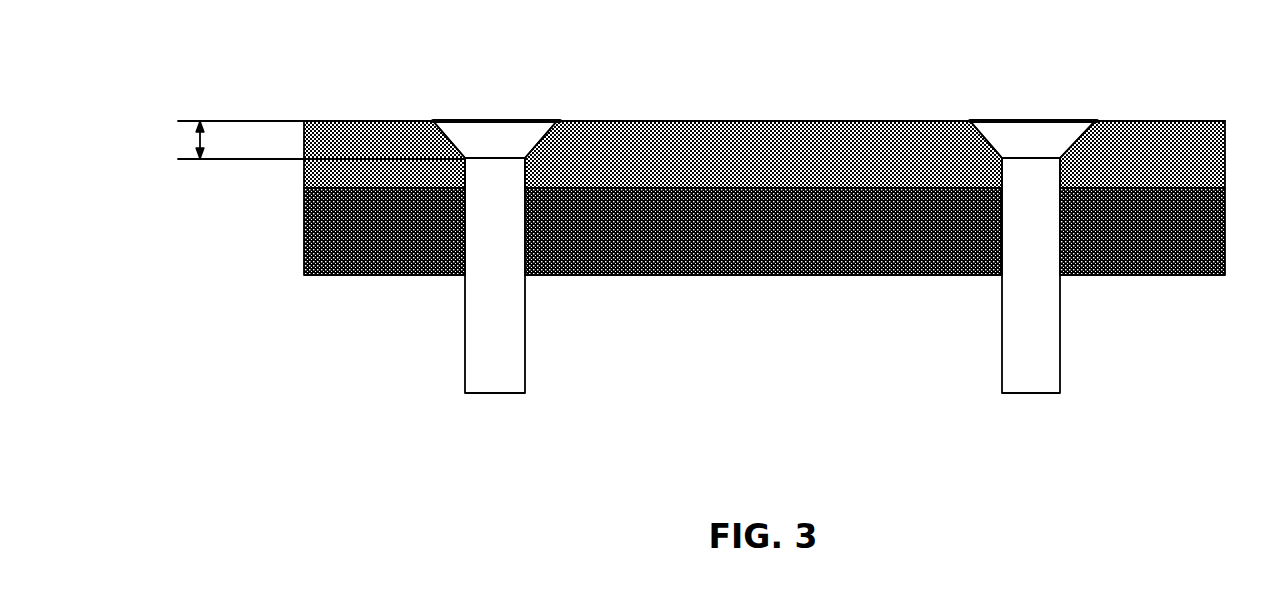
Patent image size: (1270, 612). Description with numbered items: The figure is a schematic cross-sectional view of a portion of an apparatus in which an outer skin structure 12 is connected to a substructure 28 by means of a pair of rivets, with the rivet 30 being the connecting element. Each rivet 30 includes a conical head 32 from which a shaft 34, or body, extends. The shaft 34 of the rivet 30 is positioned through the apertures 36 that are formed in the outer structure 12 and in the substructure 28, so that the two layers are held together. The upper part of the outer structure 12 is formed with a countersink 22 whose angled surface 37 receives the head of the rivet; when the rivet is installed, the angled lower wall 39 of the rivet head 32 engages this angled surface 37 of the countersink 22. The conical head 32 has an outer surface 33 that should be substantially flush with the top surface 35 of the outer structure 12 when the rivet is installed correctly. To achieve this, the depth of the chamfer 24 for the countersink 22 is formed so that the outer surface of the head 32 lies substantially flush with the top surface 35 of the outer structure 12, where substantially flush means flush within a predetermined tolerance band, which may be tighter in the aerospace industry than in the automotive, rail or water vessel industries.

The outer skin structure 12 is at (1160, 140).
The countersink 22 is at (552, 131).
The chamfer 24 is at (196, 140).
The substructure 28 is at (1140, 243).
The rivet 30 is at (503, 367).
The conical head 32 is at (492, 140).
The outer surface 33 is at (530, 124).
The shaft 34 is at (488, 325).
The top surface 35 is at (722, 121).
The apertures 36 is at (467, 243).
The angled surface 37 is at (452, 121).
The angled lower wall 39 is at (465, 155).